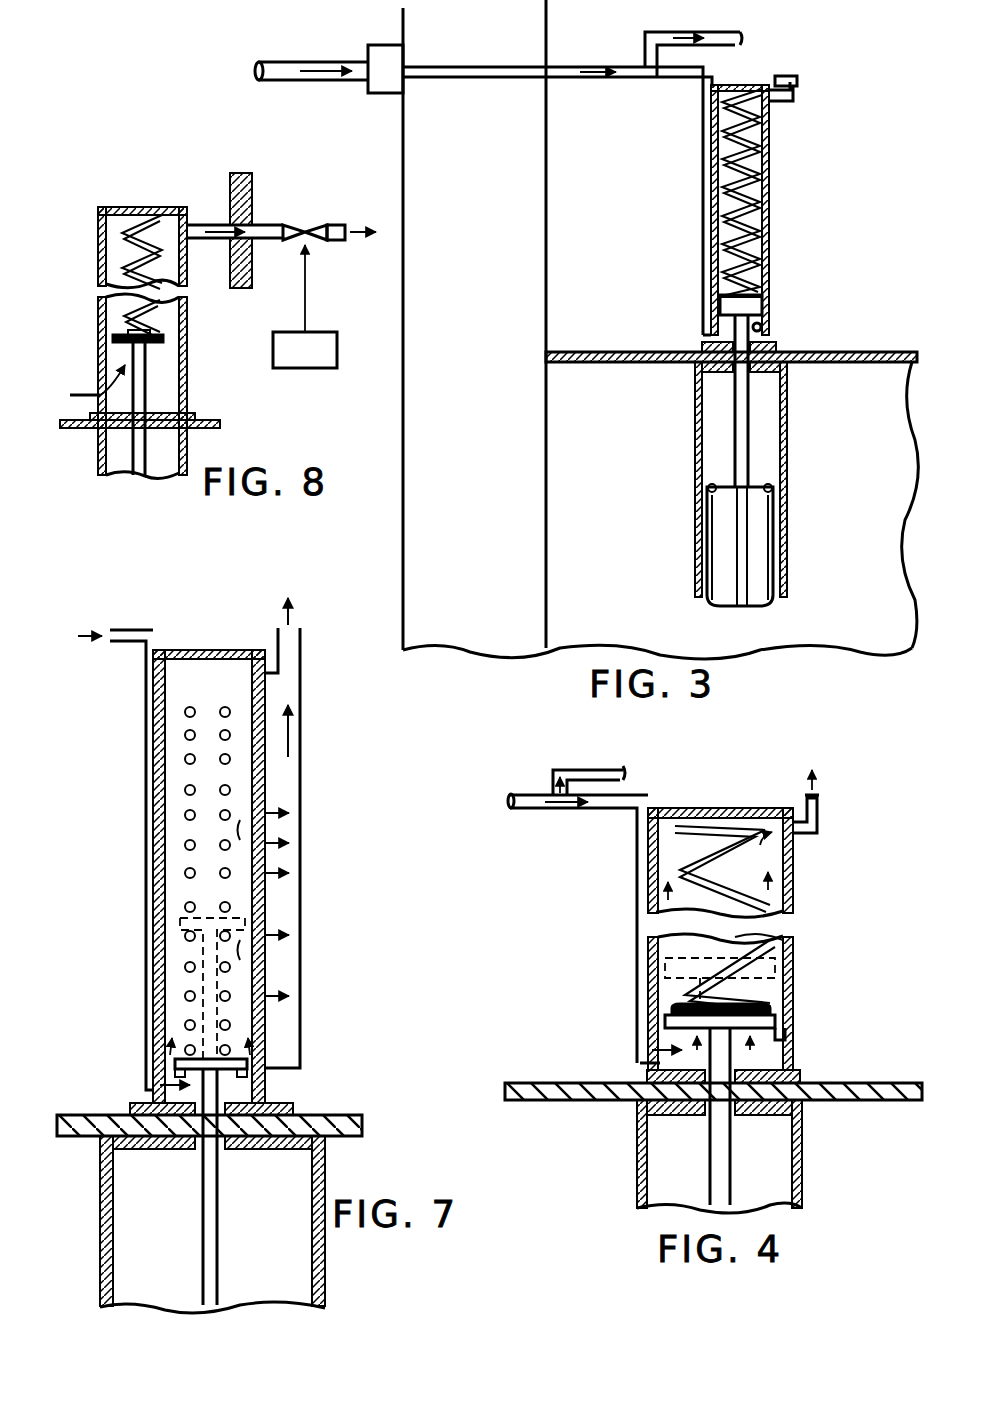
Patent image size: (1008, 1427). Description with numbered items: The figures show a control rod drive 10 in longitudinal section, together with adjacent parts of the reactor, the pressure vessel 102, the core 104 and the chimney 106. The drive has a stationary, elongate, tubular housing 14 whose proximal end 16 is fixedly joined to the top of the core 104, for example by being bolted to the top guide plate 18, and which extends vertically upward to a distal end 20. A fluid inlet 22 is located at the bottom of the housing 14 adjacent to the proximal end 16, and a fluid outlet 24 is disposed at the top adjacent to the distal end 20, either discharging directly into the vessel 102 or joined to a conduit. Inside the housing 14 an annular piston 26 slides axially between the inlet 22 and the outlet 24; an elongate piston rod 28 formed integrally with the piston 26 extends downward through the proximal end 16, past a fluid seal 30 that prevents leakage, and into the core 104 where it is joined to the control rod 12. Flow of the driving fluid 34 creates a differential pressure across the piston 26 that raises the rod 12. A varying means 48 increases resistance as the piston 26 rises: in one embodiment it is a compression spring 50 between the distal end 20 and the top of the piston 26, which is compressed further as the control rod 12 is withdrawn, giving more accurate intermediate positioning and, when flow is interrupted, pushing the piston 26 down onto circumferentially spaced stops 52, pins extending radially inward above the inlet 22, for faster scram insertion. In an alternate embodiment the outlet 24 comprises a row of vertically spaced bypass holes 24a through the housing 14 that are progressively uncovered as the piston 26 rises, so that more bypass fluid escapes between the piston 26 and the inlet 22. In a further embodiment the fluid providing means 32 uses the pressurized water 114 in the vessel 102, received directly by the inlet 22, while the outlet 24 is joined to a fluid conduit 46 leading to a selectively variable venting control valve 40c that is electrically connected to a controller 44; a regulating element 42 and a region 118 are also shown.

In FIG. 3, the control rod drive 10 is at (806, 167).
In FIG. 8, the control rod drive 10 is at (166, 307).
In FIG. 7, the control rod drive 10 is at (183, 830).
In FIG. 4, the control rod drive 10 is at (747, 896).
In FIG. 3, the control rod 12 is at (755, 558).
In FIG. 7, the control rod 12 is at (212, 1224).
In FIG. 4, the control rod 12 is at (719, 1156).
In FIG. 3, the housing 14 is at (770, 200).
In FIG. 8, the housing 14 is at (187, 375).
In FIG. 7, the housing 14 is at (153, 870).
In FIG. 4, the housing 14 is at (793, 876).
In FIG. 3, the proximal end 16 is at (776, 345).
In FIG. 7, the proximal end 16 is at (290, 1103).
In FIG. 4, the proximal end 16 is at (800, 1072).
In FIG. 3, the top guide plate 18 is at (878, 352).
In FIG. 8, the top guide plate 18 is at (210, 420).
In FIG. 7, the top guide plate 18 is at (345, 1115).
In FIG. 4, the top guide plate 18 is at (890, 1083).
In FIG. 3, the distal end 20 is at (736, 85).
In FIG. 8, the distal end 20 is at (128, 205).
In FIG. 7, the distal end 20 is at (210, 650).
In FIG. 4, the distal end 20 is at (700, 808).
In FIG. 3, the fluid inlet 22 is at (705, 330).
In FIG. 8, the fluid inlet 22 is at (100, 395).
In FIG. 7, the fluid inlet 22 is at (146, 1076).
In FIG. 4, the fluid inlet 22 is at (645, 1047).
In FIG. 3, the fluid outlet 24 is at (785, 100).
In FIG. 8, the fluid outlet 24 is at (192, 212).
In FIG. 7, the fluid outlet 24 is at (300, 665).
In FIG. 4, the fluid outlet 24 is at (810, 833).
In FIG. 7, the bypass holes 24a is at (232, 792).
In FIG. 3, the piston 26 is at (722, 306).
In FIG. 8, the piston 26 is at (165, 348).
In FIG. 7, the piston 26 is at (175, 1059).
In FIG. 4, the piston 26 is at (775, 1020).
In FIG. 3, the piston rod 28 is at (735, 402).
In FIG. 8, the piston rod 28 is at (133, 455).
In FIG. 7, the piston rod 28 is at (217, 1258).
In FIG. 4, the piston rod 28 is at (710, 1150).
In FIG. 4, the fluid seal 30 is at (660, 1063).
In FIG. 3, the fluid providing means 32 is at (283, 60).
In FIG. 4, the fluid providing means 32 is at (527, 793).
In FIG. 3, the driving fluid 34 is at (318, 64).
In FIG. 7, the driving fluid 34 is at (90, 638).
In FIG. 4, the driving fluid 34 is at (562, 808).
In FIG. 8, the venting control valve 40c is at (314, 225).
In FIG. 3, the pressure regulator 42 is at (376, 45).
In FIG. 8, the controller 44 is at (290, 364).
In FIG. 3, the fluid conduit 46 is at (305, 80).
In FIG. 8, the fluid conduit 46 is at (205, 225).
In FIG. 7, the fluid conduit 46 is at (135, 630).
In FIG. 4, the fluid conduit 46 is at (520, 808).
In FIG. 3, the varying means 48 is at (762, 150).
In FIG. 7, the varying means 48 is at (265, 845).
In FIG. 4, the varying means 48 is at (772, 940).
In FIG. 3, the spring 50 is at (765, 255).
In FIG. 8, the spring 50 is at (115, 265).
In FIG. 4, the spring 50 is at (690, 905).
In FIG. 3, the stops 52 is at (765, 325).
In FIG. 4, the stops 52 is at (790, 1045).
In FIG. 3, the pressure vessel 102 is at (403, 575).
In FIG. 8, the pressure vessel 102 is at (252, 185).
In FIG. 3, the core 104 is at (546, 530).
In FIG. 3, the chimney 106 is at (546, 178).
In FIG. 8, the water 114 is at (85, 395).
In FIG. 3, the chamber 118 is at (447, 399).